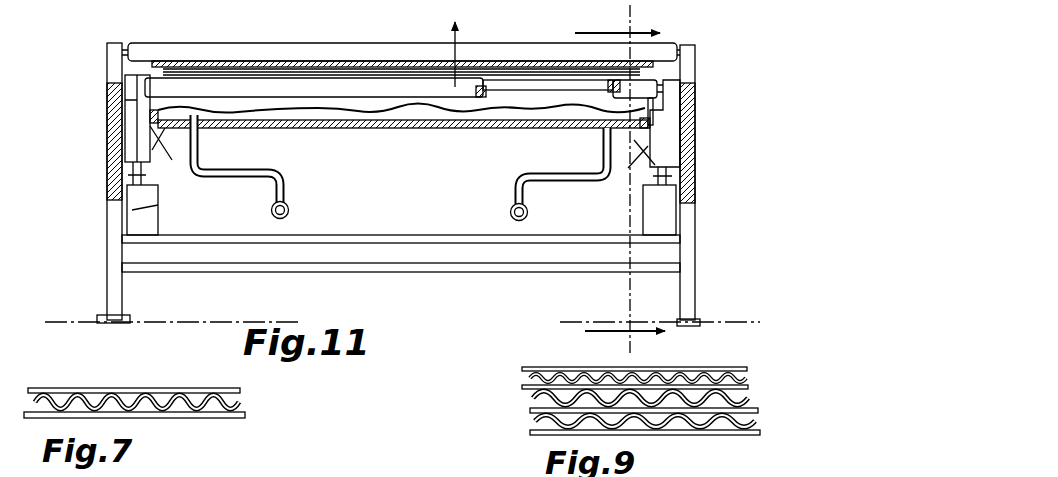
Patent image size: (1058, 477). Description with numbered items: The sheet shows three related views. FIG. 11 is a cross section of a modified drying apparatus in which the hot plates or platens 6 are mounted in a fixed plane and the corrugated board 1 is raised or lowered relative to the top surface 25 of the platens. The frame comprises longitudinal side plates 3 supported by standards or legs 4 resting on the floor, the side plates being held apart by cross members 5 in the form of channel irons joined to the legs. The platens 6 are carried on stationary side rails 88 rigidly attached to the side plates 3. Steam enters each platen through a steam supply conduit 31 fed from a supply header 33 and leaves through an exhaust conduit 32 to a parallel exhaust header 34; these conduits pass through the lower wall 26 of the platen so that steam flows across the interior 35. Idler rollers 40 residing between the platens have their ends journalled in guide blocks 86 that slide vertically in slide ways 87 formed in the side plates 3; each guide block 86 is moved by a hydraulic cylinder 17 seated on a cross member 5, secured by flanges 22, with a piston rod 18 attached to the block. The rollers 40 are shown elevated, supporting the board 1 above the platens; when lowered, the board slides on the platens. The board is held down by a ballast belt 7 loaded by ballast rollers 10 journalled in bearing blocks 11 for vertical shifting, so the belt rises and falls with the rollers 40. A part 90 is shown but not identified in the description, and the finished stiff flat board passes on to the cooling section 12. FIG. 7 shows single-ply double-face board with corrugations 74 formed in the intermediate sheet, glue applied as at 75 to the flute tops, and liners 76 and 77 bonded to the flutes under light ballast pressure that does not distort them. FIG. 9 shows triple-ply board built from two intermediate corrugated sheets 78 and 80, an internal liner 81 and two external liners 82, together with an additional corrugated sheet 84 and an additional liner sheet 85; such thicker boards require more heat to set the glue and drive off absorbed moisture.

In FIG. 11, the corrugated board 1 is at (395, 70).
In FIG. 11, the longitudinal side plate 3 is at (107, 196).
In FIG. 11, the standard or leg 4 is at (122, 302).
In FIG. 11, the cross member 5 is at (410, 262).
In FIG. 11, the hot plate or platen 6 is at (395, 132).
In FIG. 11, the ballast belt 7 is at (213, 61).
In FIG. 11, the ballast roller 10 is at (293, 50).
In FIG. 11, the bearing block 11 is at (107, 58).
In FIG. 11, the cooling section 12 is at (620, 179).
In FIG. 11, the hydraulic cylinder 17 is at (148, 217).
In FIG. 11, the piston rod 18 is at (133, 172).
In FIG. 11, the flange 22 is at (158, 205).
In FIG. 11, the top surface 25 is at (505, 85).
In FIG. 11, the lower wall 26 is at (455, 128).
In FIG. 11, the steam supply conduit 31 is at (262, 170).
In FIG. 11, the exhaust conduit 32 is at (573, 173).
In FIG. 11, the supply header 33 is at (290, 210).
In FIG. 11, the exhaust header 34 is at (529, 212).
In FIG. 11, the platen interior 35 is at (333, 115).
In FIG. 11, the idler roller 40 is at (346, 60).
In FIG. 11, the guide block 86 is at (130, 128).
In FIG. 11, the slide way 87 is at (110, 157).
In FIG. 11, the stationary side rail 88 is at (402, 156).
In FIG. 11, the middle plate 90 is at (541, 85).
In FIG. 7, the corrugation 74 is at (140, 390).
In FIG. 7, the liquid glue 75 is at (104, 388).
In FIG. 7, the liner 76 is at (51, 388).
In FIG. 7, the liner 77 is at (232, 418).
In FIG. 9, the intermediate sheet 78 is at (535, 399).
In FIG. 9, the intermediate sheet 80 is at (550, 425).
In FIG. 9, the internal liner 81 is at (754, 405).
In FIG. 9, the external liner 82 is at (528, 383).
In FIG. 9, the additional corrugated sheet 84 is at (592, 367).
In FIG. 9, the additional liner sheet 85 is at (702, 366).